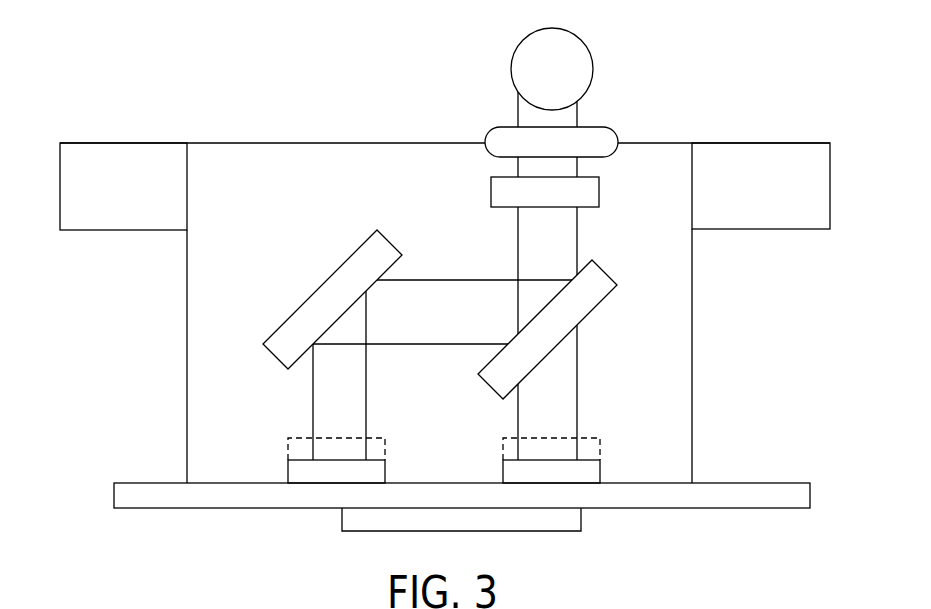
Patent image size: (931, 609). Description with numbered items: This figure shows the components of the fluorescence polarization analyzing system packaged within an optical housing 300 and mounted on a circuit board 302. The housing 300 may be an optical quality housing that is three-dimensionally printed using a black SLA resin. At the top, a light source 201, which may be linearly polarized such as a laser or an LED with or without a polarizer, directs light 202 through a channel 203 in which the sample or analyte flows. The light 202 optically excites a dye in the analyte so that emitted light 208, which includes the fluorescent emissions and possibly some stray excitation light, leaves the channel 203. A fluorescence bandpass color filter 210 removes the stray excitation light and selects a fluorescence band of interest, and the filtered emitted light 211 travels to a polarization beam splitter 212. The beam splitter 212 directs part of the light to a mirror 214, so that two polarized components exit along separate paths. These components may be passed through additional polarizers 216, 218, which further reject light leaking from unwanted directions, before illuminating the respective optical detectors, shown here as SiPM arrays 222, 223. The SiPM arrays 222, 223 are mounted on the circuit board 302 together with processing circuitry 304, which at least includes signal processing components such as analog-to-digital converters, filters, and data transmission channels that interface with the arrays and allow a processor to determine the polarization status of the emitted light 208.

The optical housing 300 is at (274, 142).
The circuit board 302 is at (765, 490).
The processing circuitry 304 is at (583, 512).
The light source 201 is at (528, 64).
The light 202 is at (528, 117).
The channel 203 is at (617, 138).
The emitted light 208 is at (535, 163).
The fluorescence bandpass color filter 210 is at (500, 192).
The filtered emitted light 211 is at (528, 245).
The polarization beam splitter 212 is at (607, 273).
The mirror 214 is at (325, 288).
The polarizer 216 is at (592, 438).
The polarizer 218 is at (378, 438).
The SiPM array 222 is at (602, 472).
The SiPM array 223 is at (287, 472).